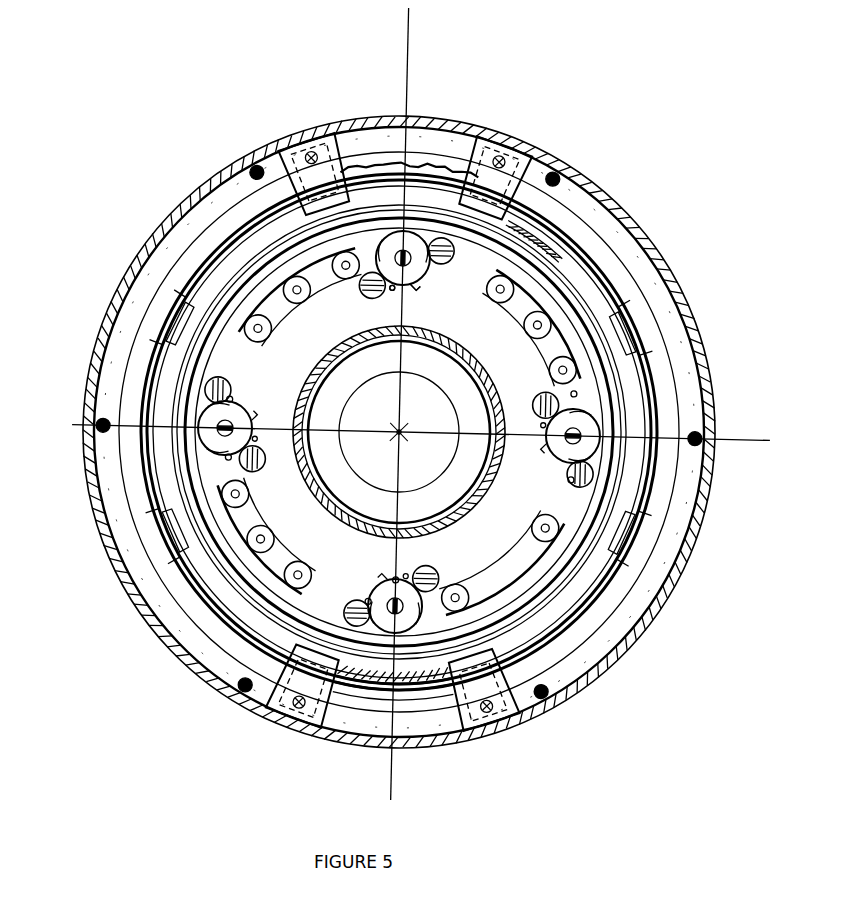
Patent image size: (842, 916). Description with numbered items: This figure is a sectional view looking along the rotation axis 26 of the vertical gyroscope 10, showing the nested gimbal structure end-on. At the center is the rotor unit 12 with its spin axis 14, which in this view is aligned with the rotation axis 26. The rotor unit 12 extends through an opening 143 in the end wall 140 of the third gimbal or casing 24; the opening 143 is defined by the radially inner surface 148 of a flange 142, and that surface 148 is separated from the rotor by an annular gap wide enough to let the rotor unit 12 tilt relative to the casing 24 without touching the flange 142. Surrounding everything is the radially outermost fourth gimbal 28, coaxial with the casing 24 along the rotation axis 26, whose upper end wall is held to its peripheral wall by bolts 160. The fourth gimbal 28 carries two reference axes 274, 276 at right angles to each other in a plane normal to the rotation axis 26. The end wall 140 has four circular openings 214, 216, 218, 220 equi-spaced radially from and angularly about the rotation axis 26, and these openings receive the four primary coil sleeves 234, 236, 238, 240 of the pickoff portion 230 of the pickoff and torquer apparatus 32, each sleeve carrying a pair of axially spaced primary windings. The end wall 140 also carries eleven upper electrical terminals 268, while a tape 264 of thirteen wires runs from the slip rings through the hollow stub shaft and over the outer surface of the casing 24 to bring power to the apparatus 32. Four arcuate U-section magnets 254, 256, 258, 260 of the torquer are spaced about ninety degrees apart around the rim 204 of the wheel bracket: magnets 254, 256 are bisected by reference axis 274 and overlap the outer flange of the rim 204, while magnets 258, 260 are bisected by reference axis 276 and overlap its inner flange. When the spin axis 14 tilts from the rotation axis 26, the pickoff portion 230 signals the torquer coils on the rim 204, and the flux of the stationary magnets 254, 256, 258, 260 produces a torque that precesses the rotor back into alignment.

The gyroscope 10 is at (666, 212).
The rotor unit 12 is at (424, 469).
The spin axis 14 is at (400, 428).
The rotation axis 26 is at (399, 432).
The third gimbal or casing 24 is at (543, 633).
The fourth gimbal 28 is at (706, 372).
The pickoff and torquer apparatus 32 is at (663, 470).
The end wall 140 is at (510, 531).
The flange 142 is at (485, 409).
The opening 143 is at (460, 358).
The radially inner surface 148 is at (472, 378).
The bolts 160 is at (552, 173).
The rim 204 is at (556, 648).
The circular opening 214 is at (242, 444).
The circular opening 216 is at (554, 466).
The circular opening 218 is at (389, 290).
The circular opening 220 is at (400, 576).
The pickoff portion 230 is at (411, 233).
The primary coil sleeve 234 is at (239, 404).
The primary coil sleeve 236 is at (564, 419).
The primary coil sleeve 238 is at (411, 286).
The primary coil sleeve 240 is at (372, 600).
The magnet 254 is at (131, 482).
The magnet 256 is at (660, 512).
The magnet 258 is at (475, 138).
The magnet 260 is at (436, 717).
The tape 264 is at (523, 240).
The upper electrical terminals 268 is at (499, 288).
The reference axis 274 is at (735, 438).
The reference axis 276 is at (408, 35).